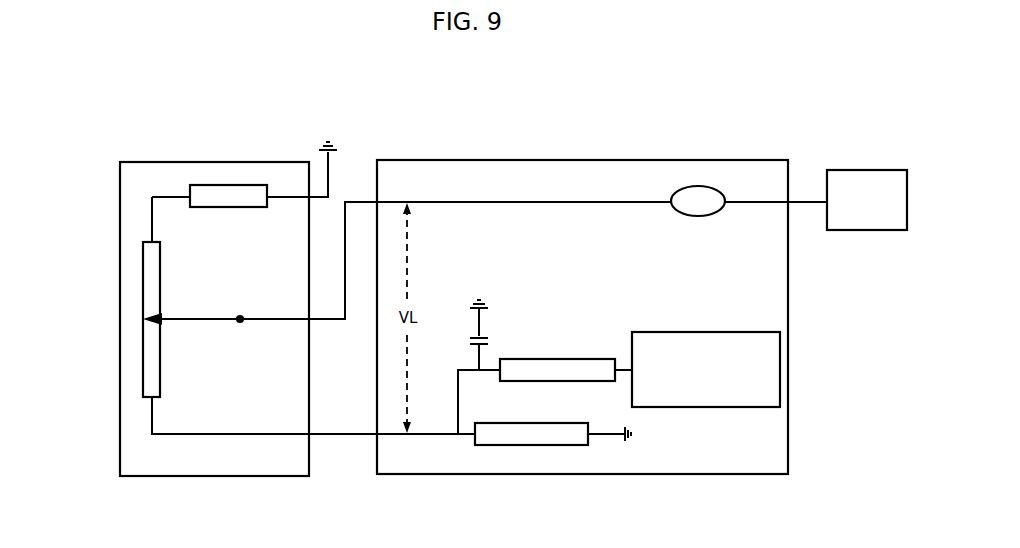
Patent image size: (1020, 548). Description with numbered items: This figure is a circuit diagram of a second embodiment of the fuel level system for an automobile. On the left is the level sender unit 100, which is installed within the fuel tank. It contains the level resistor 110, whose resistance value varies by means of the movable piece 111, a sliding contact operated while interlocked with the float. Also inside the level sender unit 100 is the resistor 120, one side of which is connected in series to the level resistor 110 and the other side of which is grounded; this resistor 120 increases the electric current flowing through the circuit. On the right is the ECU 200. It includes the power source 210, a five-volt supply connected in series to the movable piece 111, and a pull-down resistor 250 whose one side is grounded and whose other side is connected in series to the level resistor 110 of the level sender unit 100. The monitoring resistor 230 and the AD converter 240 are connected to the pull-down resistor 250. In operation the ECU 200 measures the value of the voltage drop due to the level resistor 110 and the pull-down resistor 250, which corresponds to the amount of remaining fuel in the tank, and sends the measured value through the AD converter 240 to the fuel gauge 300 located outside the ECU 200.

The level sender unit 100 is at (256, 152).
The level resistor 110 is at (148, 366).
The movable piece 111 is at (213, 322).
The resistor 120 is at (228, 185).
The ECU 200 is at (447, 152).
The power source 210 is at (698, 186).
The monitoring resistor 230 is at (558, 381).
The AD converter 240 is at (700, 407).
The pull-down resistor 250 is at (503, 445).
The fuel gauge 300 is at (867, 170).